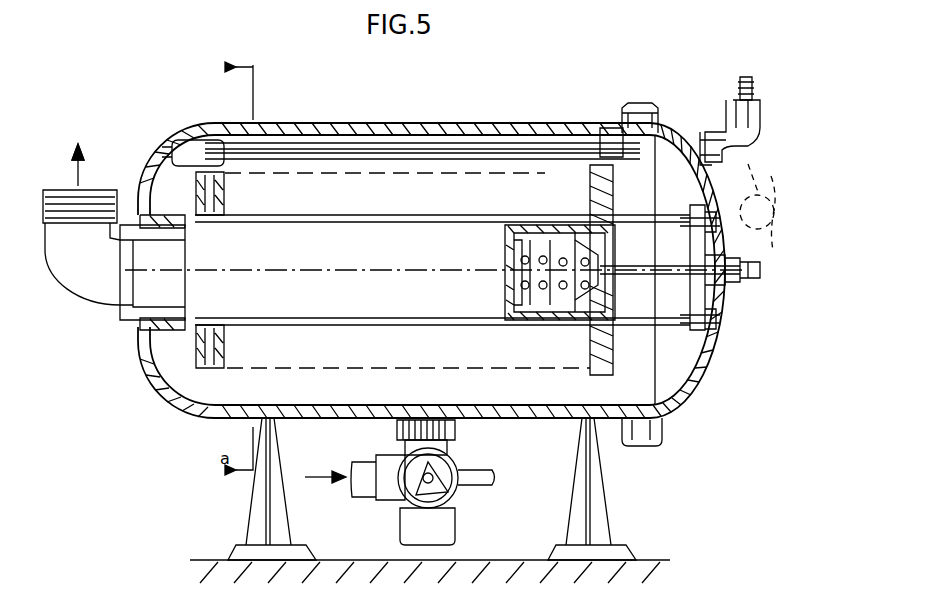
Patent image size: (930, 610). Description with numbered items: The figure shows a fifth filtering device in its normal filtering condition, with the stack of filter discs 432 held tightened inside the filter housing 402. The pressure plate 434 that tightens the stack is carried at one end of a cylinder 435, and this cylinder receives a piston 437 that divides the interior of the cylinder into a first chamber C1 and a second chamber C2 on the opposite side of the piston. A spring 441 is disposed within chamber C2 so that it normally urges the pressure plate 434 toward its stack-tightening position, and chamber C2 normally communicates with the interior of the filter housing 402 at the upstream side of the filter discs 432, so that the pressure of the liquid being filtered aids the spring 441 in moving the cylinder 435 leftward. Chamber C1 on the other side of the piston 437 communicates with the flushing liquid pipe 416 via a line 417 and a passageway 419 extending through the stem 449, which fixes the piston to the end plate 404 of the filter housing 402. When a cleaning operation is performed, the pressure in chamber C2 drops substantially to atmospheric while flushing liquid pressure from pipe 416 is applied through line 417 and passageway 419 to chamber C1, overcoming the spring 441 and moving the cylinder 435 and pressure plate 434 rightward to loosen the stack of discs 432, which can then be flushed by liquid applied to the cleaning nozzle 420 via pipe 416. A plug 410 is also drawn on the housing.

The filter housing 402 is at (146, 158).
The end plate 404 is at (697, 398).
The plug 410 is at (543, 168).
The flushing liquid pipe 416 is at (733, 140).
The line 417 is at (772, 196).
The passageway 419 is at (706, 318).
The cleaning nozzle 420 is at (213, 138).
The filter discs 432 is at (583, 167).
The pressure plate 434 is at (598, 237).
The cylinder 435 is at (522, 322).
The piston 437 is at (628, 322).
The spring 441 is at (560, 300).
The stem 449 is at (712, 278).
The first chamber C1 is at (640, 262).
The second chamber C2 is at (550, 249).